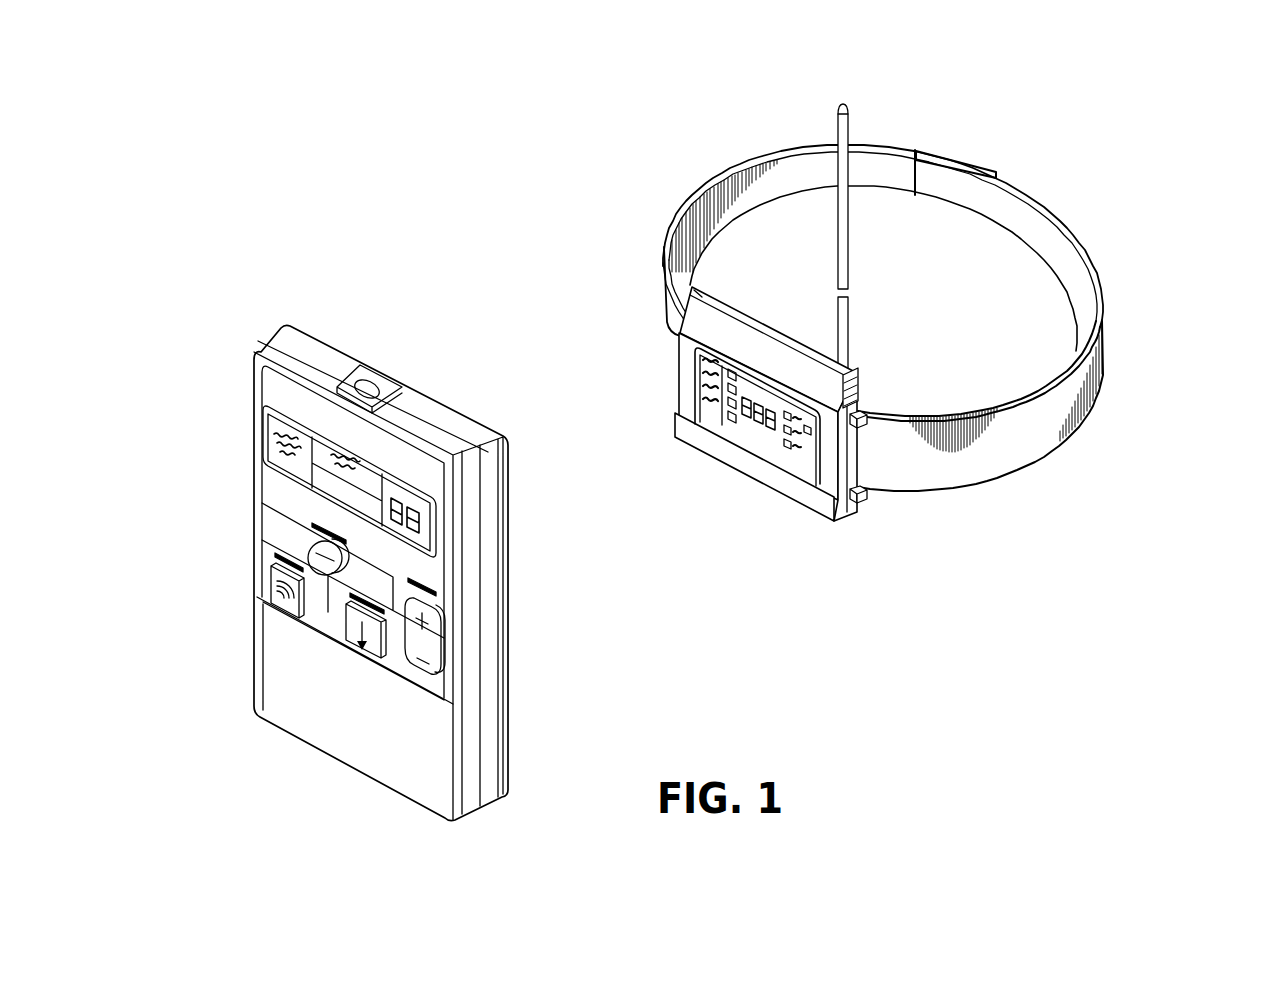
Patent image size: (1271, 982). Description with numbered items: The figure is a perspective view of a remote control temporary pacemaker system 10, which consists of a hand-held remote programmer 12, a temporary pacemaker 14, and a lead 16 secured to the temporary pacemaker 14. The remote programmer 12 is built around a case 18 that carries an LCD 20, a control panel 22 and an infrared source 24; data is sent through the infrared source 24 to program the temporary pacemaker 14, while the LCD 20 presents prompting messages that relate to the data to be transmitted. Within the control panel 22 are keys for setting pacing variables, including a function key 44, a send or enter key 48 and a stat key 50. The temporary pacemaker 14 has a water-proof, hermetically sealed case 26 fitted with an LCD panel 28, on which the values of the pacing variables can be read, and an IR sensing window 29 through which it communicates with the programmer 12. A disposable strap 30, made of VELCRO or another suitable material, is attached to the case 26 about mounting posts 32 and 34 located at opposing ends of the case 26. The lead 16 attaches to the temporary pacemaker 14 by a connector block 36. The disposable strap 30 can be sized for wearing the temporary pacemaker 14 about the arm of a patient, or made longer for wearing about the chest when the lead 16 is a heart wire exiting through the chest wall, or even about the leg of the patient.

The remote control temporary pacemaker system 10 is at (1108, 155).
The hand-held remote programmer 12 is at (222, 389).
The temporary pacemaker 14 is at (650, 176).
The lead 16 is at (824, 125).
The case 18 is at (490, 607).
The LCD 20 is at (425, 510).
The control panel 22 is at (448, 660).
The infrared source 24 is at (370, 386).
The case 26 is at (815, 507).
The LCD panel 28 is at (762, 432).
The IR sensing window 29 is at (809, 433).
The disposable strap 30 is at (1101, 347).
The mounting post 32 is at (866, 413).
The mounting post 34 is at (707, 282).
The connector block 36 is at (859, 380).
The function key 44 is at (350, 637).
The send key 48 is at (278, 598).
The stat key 50 is at (318, 546).